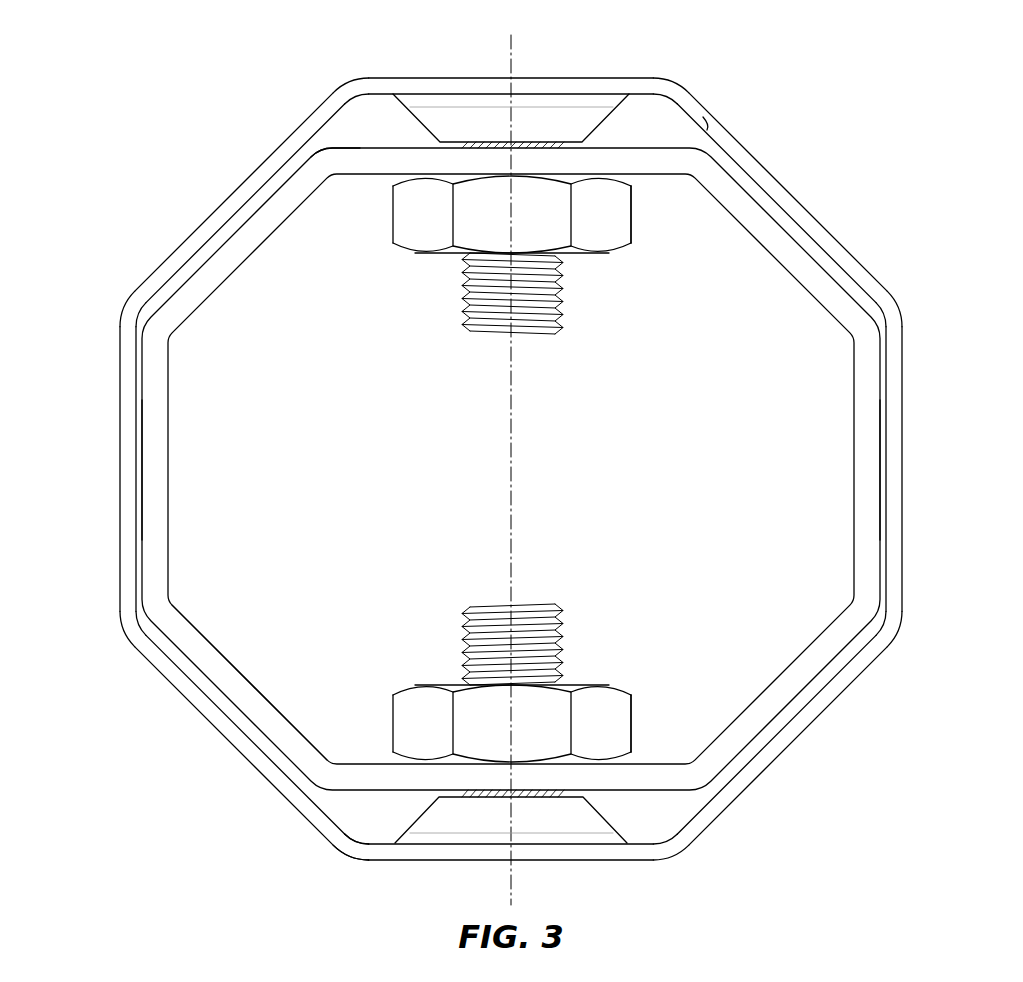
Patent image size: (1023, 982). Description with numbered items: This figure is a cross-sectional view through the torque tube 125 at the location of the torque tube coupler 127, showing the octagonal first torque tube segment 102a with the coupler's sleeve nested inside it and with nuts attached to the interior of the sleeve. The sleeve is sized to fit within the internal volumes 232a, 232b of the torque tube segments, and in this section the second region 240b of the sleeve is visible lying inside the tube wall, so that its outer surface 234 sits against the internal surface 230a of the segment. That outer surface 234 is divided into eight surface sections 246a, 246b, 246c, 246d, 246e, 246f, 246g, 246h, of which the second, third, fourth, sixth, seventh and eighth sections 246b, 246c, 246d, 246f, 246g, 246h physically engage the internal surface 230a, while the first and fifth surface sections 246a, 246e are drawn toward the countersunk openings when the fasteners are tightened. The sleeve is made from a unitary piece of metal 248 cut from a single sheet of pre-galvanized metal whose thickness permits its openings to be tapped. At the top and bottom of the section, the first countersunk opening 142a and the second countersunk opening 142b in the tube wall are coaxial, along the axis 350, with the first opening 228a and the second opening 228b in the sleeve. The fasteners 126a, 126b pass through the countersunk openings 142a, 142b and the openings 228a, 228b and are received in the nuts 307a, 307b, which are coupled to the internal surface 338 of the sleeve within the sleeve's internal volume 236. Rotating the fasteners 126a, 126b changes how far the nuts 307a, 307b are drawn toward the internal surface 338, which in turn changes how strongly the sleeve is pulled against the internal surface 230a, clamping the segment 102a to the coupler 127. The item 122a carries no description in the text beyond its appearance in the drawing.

The torque tube 125 is at (918, 71).
The torque tube coupler 127 is at (257, 131).
The first torque tube segment 102a is at (707, 123).
The inner housing 122a is at (785, 187).
The first countersunk opening 142a is at (577, 120).
The second countersunk opening 142b is at (452, 840).
The internal volume of the first torque tube segment 232a is at (632, 825).
The internal volume of the second torque tube segment 232b is at (653, 120).
The outer surface 234 is at (339, 148).
The internal volume 236 is at (262, 658).
The internal surface 230a is at (345, 837).
The second region 240b is at (875, 503).
The unitary piece of metal 248 is at (150, 503).
The internal surface 338 is at (840, 300).
The axis 350 is at (513, 58).
The first surface section 246a is at (383, 148).
The second surface section 246b is at (813, 243).
The third surface section 246c is at (903, 428).
The fourth surface section 246d is at (838, 675).
The fifth surface section 246e is at (660, 800).
The sixth surface section 246f is at (188, 675).
The seventh surface section 246g is at (128, 430).
The eighth surface section 246h is at (248, 205).
The first opening 228a is at (385, 258).
The second opening 228b is at (386, 685).
The first fastener 126a is at (463, 295).
The second fastener 126b is at (463, 650).
The first nut 307a is at (613, 232).
The second nut 307b is at (614, 706).